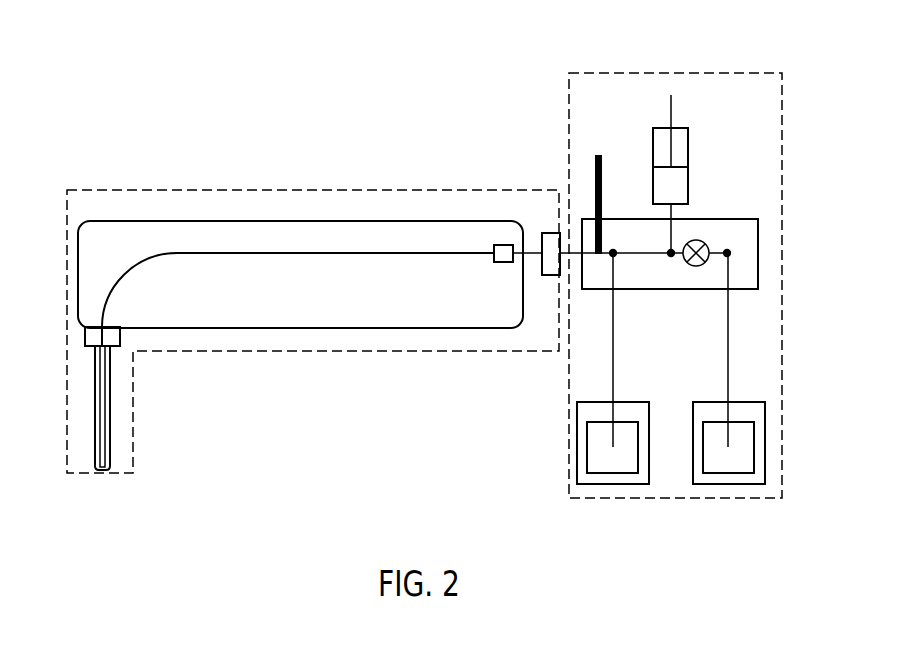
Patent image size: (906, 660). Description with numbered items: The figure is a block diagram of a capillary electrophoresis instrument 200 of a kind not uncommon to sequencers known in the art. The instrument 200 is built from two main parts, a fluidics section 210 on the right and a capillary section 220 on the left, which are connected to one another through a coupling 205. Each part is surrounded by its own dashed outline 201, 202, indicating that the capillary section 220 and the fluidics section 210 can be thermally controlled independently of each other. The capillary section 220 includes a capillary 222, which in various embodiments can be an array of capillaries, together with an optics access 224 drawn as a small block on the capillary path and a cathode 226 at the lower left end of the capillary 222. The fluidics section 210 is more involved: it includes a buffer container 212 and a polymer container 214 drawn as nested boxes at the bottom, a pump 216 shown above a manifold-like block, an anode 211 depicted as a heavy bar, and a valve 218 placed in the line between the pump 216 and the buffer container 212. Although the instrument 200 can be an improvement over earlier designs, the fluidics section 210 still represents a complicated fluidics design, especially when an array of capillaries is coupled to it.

The instrument 200 is at (183, 66).
The dashed outline 201 is at (108, 190).
The dashed outline 202 is at (745, 73).
The coupling 205 is at (548, 233).
The fluidics section 210 is at (684, 68).
The anode 211 is at (598, 152).
The buffer container 212 is at (725, 470).
The polymer container 214 is at (590, 460).
The pump 216 is at (655, 135).
The valve 218 is at (701, 242).
The capillary section 220 is at (249, 183).
The capillary 222 is at (112, 285).
The optics access 224 is at (500, 246).
The cathode 226 is at (85, 337).